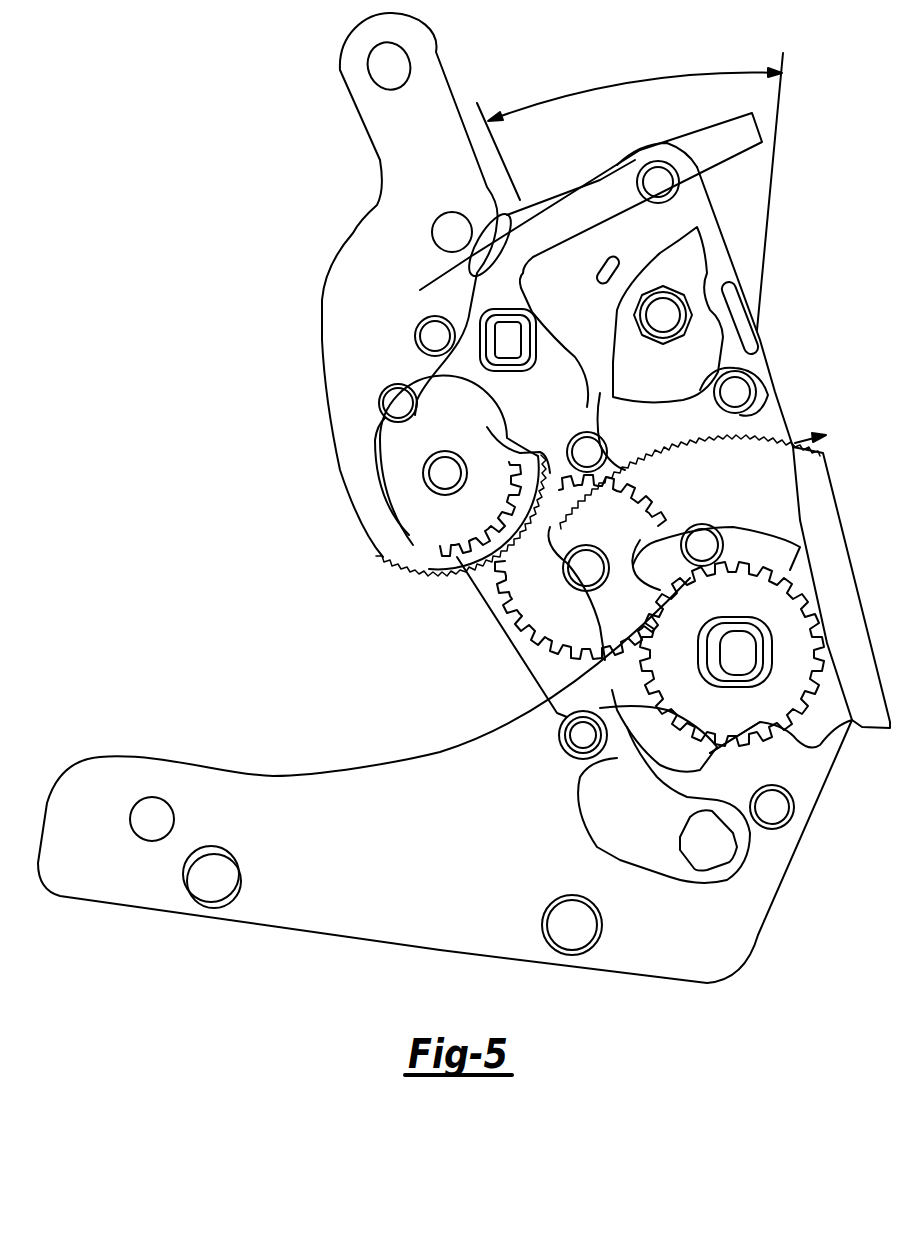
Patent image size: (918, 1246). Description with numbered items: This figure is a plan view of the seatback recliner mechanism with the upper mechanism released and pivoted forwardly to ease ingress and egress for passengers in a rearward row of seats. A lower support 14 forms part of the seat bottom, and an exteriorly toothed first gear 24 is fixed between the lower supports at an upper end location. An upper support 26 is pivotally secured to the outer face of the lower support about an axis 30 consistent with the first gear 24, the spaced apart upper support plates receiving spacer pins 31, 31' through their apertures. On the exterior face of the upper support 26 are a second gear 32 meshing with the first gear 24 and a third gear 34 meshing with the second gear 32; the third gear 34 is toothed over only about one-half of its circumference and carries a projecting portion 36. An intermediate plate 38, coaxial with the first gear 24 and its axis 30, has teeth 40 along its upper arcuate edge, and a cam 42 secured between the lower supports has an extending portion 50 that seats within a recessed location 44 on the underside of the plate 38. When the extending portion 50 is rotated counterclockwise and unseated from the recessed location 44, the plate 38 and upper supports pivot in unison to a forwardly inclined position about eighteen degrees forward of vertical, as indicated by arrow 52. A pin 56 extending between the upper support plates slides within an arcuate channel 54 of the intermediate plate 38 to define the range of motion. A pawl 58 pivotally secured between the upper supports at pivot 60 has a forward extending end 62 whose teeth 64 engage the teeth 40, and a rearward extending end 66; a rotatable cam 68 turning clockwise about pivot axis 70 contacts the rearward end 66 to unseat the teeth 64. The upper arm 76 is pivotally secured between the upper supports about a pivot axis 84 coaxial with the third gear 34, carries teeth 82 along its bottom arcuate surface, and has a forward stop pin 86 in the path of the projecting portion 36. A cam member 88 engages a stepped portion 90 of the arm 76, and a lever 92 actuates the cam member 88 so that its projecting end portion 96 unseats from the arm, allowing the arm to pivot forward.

The lower support 14 is at (282, 787).
The first gear 24 is at (813, 650).
The upper support 26 is at (537, 660).
The axis 30 is at (722, 653).
The spacer pin 31 is at (576, 426).
The spacer pin 31' is at (417, 315).
The second gear 32 is at (518, 628).
The third gear 34 is at (390, 458).
The projecting portion 36 is at (410, 570).
The intermediate plate 38 is at (850, 583).
The teeth 40 is at (822, 433).
The cam 42 is at (658, 857).
The recessed location 44 is at (703, 740).
The extending portion 50 is at (617, 758).
The arrow 52 is at (625, 78).
The arcuate channel 54 is at (790, 537).
The pin 56 is at (717, 527).
The pawl 58 is at (760, 380).
The pivot 60 is at (713, 381).
The forward extending end 62 is at (662, 435).
The teeth 64 is at (733, 445).
The rearward extending end 66 is at (728, 280).
The rotatable cam 68 is at (703, 230).
The pivot axis 70 is at (674, 326).
The upper arm 76 is at (327, 347).
The teeth 82 is at (466, 570).
The pivot axis 84 is at (448, 477).
The forward stop pin 86 is at (395, 386).
The cam member 88 is at (540, 401).
The stepped portion 90 is at (567, 493).
The lever 92 is at (563, 207).
The projecting end portion 96 is at (542, 447).